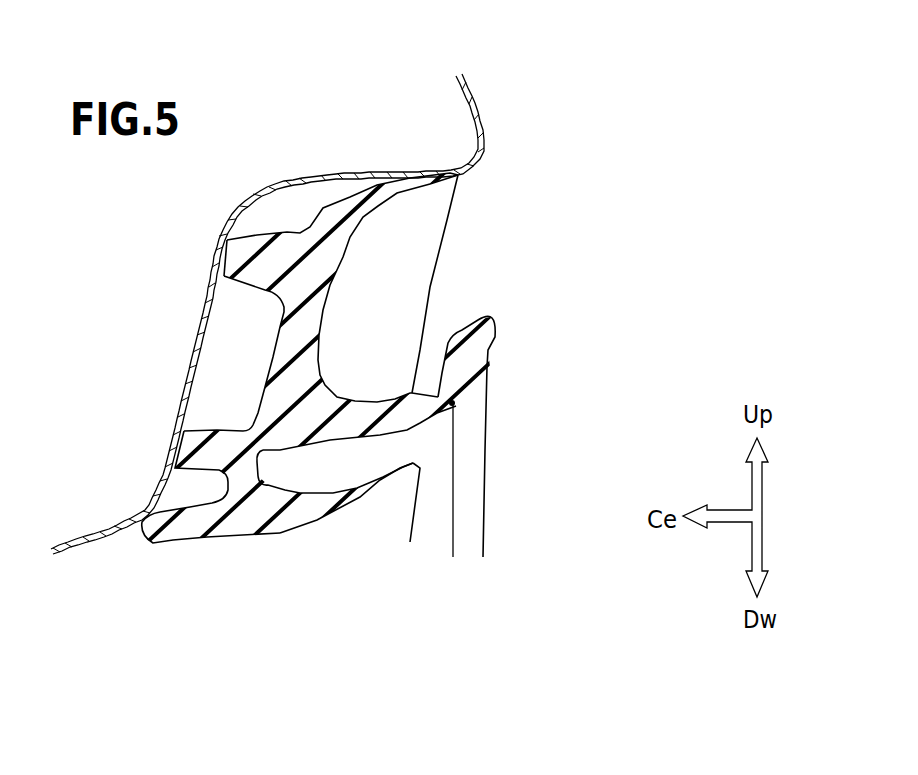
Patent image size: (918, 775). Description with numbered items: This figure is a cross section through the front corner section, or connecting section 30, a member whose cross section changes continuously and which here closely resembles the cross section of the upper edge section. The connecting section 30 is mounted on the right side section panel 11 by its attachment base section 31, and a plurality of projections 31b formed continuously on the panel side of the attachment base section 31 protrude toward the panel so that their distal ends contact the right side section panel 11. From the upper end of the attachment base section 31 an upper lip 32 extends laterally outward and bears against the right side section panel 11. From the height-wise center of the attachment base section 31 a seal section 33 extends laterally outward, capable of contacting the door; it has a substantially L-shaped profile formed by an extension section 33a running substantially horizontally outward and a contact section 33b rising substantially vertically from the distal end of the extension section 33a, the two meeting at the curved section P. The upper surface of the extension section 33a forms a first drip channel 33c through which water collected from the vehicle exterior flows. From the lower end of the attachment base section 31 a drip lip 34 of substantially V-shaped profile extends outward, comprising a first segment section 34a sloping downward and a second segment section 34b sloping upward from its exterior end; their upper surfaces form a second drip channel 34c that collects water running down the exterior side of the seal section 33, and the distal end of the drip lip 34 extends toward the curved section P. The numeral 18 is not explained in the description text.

The right side section panel 11 is at (508, 124).
The connecting section 30 is at (454, 302).
The mounting member 18 is at (303, 216).
The attachment base section 31 is at (275, 357).
The projections 31b is at (227, 278).
The upper lip 32 is at (390, 173).
The seal section 33 is at (443, 366).
The extension section 33a is at (407, 430).
The contact section 33b is at (579, 455).
The first drip channel 33c is at (410, 213).
The drip lip 34 is at (434, 539).
The first segment section 34a is at (297, 535).
The second segment section 34b is at (403, 497).
The second drip channel 34c is at (356, 491).
The curved section P is at (438, 395).